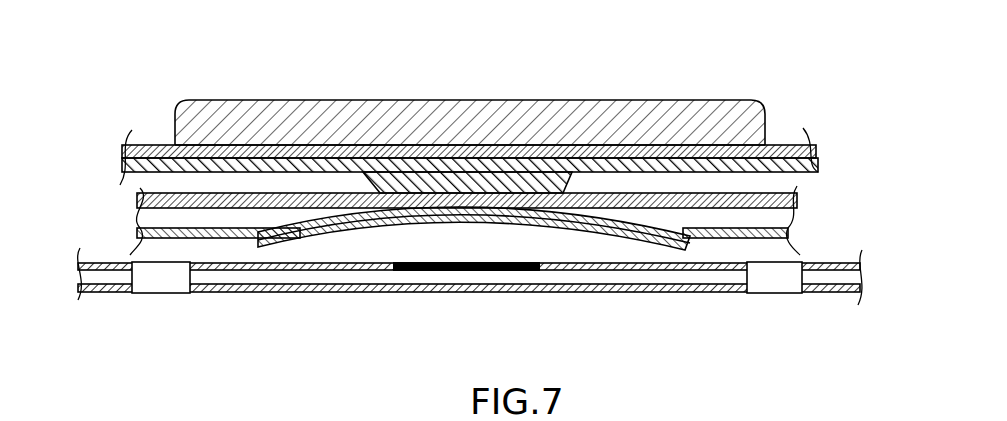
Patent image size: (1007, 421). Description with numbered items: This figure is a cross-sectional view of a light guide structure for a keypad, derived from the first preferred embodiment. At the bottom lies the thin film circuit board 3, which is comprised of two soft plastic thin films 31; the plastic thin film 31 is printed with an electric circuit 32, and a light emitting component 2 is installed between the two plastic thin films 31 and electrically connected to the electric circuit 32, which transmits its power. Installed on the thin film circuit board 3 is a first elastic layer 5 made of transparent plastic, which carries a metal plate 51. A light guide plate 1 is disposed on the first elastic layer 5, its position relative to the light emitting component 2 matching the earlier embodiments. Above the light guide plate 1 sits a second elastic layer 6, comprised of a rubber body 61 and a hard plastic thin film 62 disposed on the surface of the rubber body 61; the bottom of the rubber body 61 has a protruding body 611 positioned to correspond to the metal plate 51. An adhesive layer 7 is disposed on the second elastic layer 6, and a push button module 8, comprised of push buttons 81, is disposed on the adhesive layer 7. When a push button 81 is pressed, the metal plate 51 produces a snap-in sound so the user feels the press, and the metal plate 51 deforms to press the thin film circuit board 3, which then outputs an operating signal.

The light guide plate 1 is at (140, 200).
The light emitting component 2 is at (775, 280).
The thin film circuit board 3 is at (450, 315).
The first elastic layer 5 is at (502, 275).
The metal plate 51 is at (555, 222).
The second elastic layer 6 is at (510, 130).
The rubber body 61 is at (818, 165).
The protruding body 611 is at (443, 187).
The hard plastic thin film 62 is at (818, 149).
The adhesive layer 7 is at (172, 145).
The push button module 8 is at (470, 78).
The push button 81 is at (530, 118).
The plastic thin film 31 is at (263, 291).
The electric circuit 32 is at (372, 274).